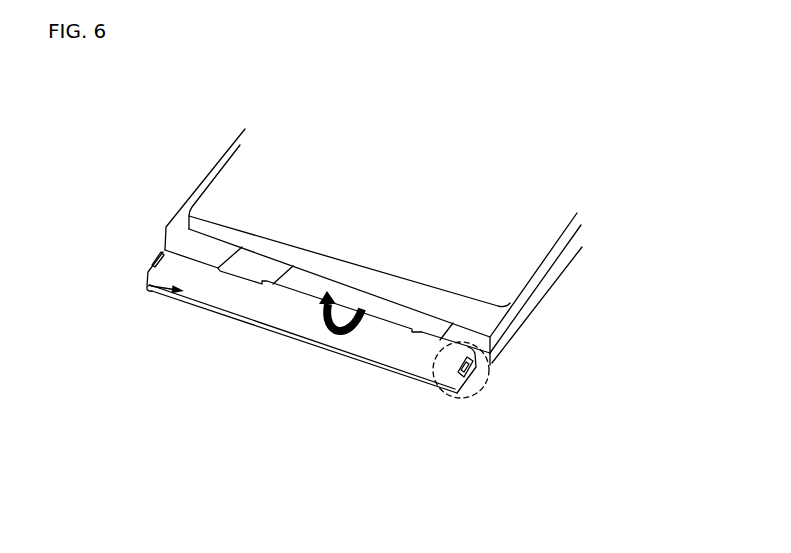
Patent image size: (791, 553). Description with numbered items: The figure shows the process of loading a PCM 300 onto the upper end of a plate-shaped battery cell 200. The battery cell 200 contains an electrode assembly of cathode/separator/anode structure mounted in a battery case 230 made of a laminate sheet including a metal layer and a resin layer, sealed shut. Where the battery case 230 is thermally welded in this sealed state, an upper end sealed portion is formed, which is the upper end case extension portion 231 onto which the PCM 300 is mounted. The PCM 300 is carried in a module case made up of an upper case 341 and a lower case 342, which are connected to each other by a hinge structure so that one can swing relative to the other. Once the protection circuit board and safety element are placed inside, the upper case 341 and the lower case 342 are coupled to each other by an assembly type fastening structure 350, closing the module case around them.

The battery cell 200 is at (211, 153).
The battery case 230 is at (488, 228).
The upper end case extension portion 231 is at (342, 290).
The PCM 300 is at (146, 288).
The upper case 341 is at (378, 374).
The lower case 342 is at (287, 312).
The assembly type fastening structure 350 is at (483, 382).